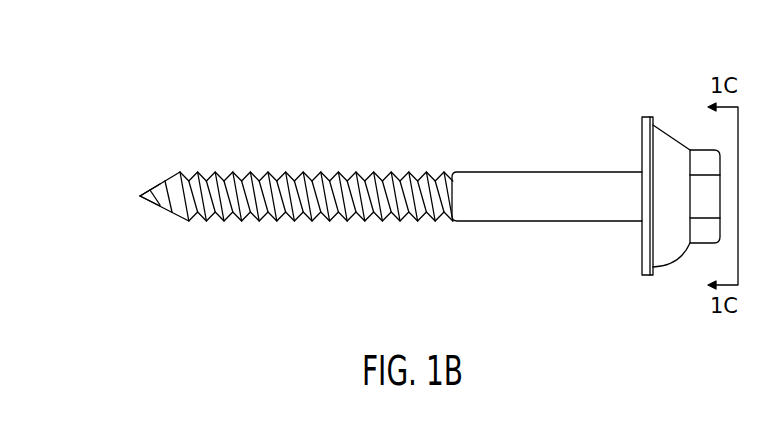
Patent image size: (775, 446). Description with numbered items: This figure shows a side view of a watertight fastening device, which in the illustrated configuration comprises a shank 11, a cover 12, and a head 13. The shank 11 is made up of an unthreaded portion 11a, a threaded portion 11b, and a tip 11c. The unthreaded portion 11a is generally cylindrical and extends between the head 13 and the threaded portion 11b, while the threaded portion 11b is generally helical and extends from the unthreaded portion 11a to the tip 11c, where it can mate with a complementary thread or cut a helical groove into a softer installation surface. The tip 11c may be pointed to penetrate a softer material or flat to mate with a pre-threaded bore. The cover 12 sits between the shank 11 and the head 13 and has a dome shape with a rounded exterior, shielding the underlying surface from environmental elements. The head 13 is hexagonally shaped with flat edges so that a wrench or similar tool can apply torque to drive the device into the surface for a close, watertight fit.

The shank 11 is at (377, 159).
The unthreaded portion 11a is at (547, 228).
The threaded portion 11b is at (453, 227).
The tip 11c is at (137, 194).
The cover 12 is at (668, 125).
The head 13 is at (699, 242).